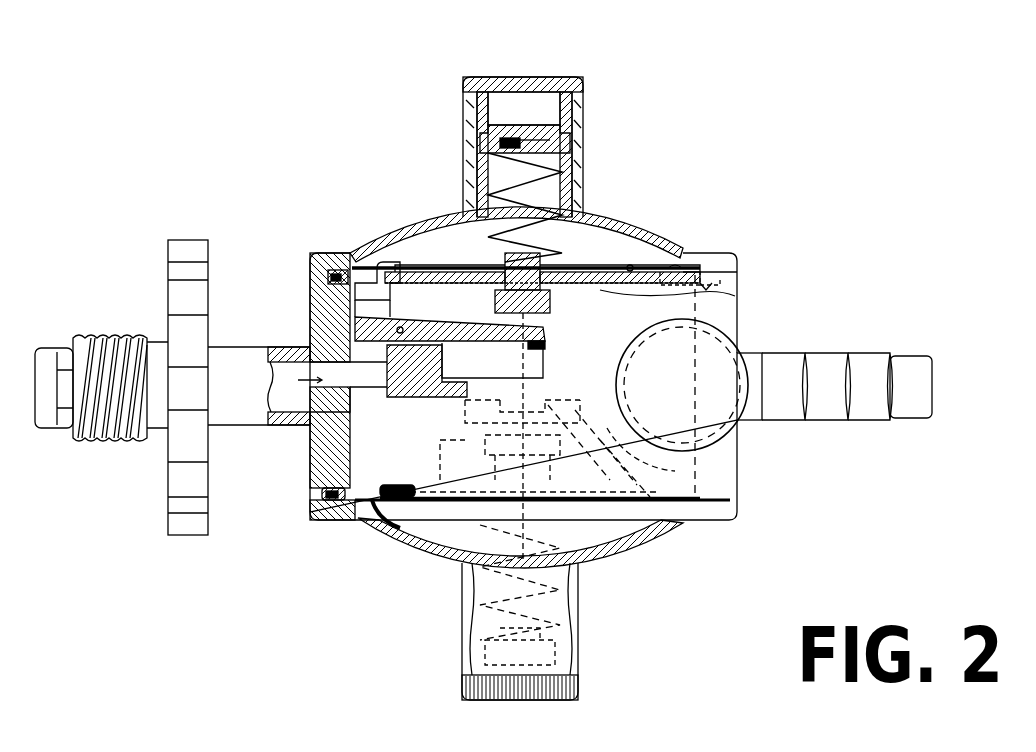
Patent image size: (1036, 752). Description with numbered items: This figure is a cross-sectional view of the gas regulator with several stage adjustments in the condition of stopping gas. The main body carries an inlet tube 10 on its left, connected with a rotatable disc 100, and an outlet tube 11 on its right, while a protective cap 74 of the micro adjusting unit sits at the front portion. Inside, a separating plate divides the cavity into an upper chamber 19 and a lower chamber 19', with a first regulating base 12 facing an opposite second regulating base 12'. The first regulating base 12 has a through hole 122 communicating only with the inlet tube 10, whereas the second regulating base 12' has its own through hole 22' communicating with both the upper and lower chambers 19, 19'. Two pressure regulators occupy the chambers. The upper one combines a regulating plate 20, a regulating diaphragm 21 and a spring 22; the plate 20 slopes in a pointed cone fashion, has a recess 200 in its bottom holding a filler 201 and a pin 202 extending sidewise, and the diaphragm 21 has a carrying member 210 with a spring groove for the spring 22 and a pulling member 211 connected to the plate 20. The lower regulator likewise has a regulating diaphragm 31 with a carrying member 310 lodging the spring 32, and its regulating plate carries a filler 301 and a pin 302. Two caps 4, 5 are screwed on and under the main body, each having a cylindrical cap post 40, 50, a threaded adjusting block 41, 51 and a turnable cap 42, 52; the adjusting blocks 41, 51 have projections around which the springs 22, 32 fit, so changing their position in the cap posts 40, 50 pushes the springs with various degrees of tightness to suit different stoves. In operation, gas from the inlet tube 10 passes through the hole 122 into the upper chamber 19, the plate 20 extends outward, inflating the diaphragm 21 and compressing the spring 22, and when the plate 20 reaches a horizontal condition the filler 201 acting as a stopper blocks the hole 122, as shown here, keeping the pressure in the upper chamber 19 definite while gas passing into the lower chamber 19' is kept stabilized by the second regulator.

The cap 4 is at (543, 378).
The cap 5 is at (457, 395).
The inlet tube 10 is at (287, 400).
The outlet tube 11 is at (872, 358).
The first regulating base 12 is at (495, 386).
The second regulating base 12' is at (743, 395).
The upper chamber 19 is at (702, 383).
The lower chamber 19' is at (297, 497).
The regulating plate 20 is at (398, 283).
The regulating diaphragm 21 is at (403, 316).
The spring 22 is at (542, 199).
The communication passage 22' is at (584, 484).
The regulating diaphragm 31 is at (380, 530).
The spring 32 is at (578, 603).
The cap post 40 is at (577, 170).
The adjusting block 41 is at (583, 130).
The turnable cap 42 is at (532, 76).
The cap post 50 is at (482, 597).
The adjusting block 51 is at (580, 645).
The turnable cap 52 is at (580, 690).
The protective cap 74 is at (720, 428).
The rotatable disc 100 is at (192, 252).
The through hole 122 is at (338, 345).
The recess 200 is at (333, 262).
The filler 201 is at (330, 312).
The pin 202 is at (345, 262).
The carrying member 210 is at (620, 258).
The pulling member 211 is at (718, 300).
The filler 301 is at (600, 540).
The pin 302 is at (637, 483).
The carrying member 310 is at (447, 530).